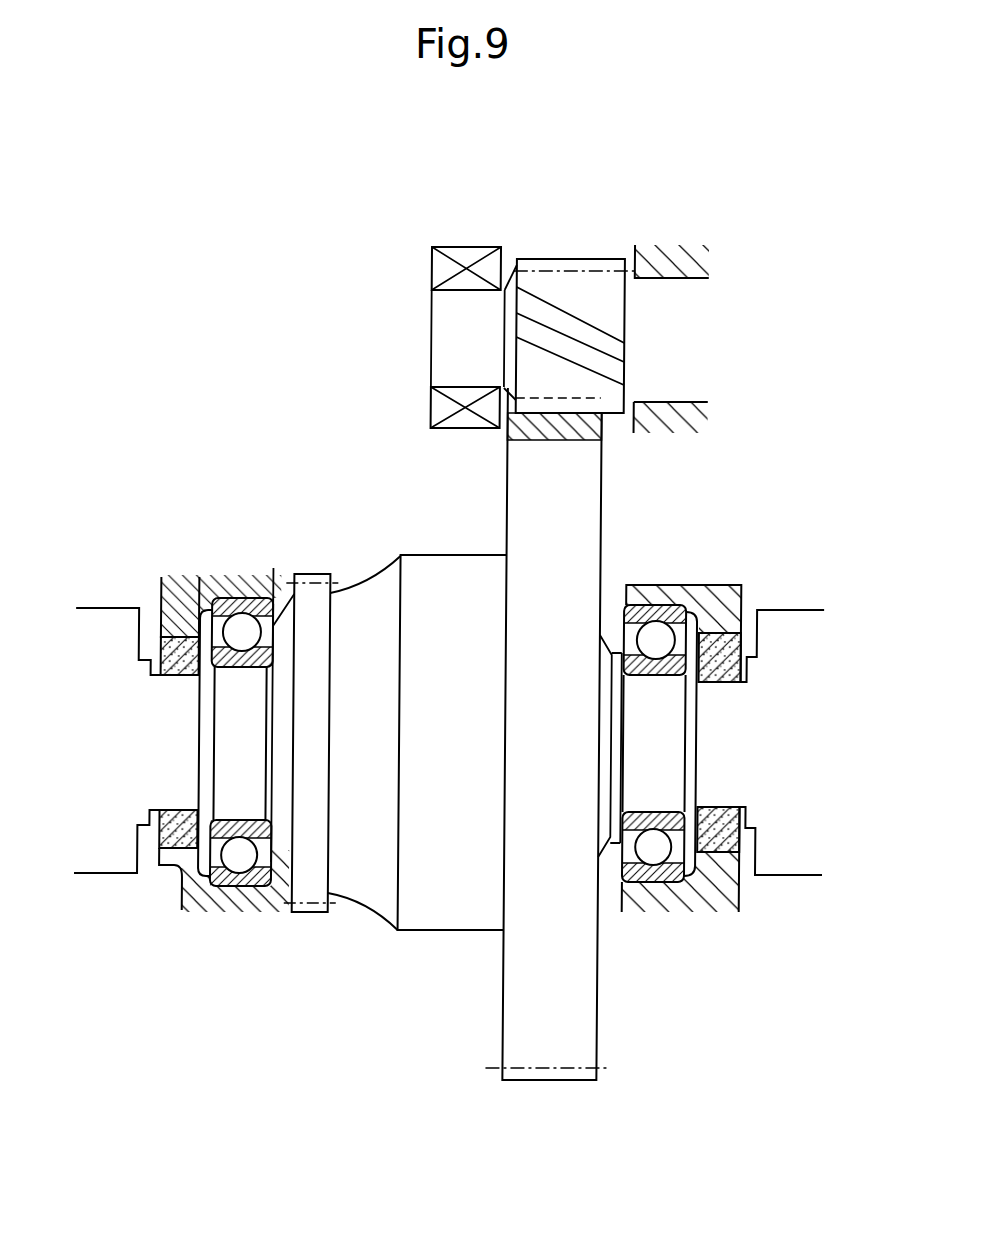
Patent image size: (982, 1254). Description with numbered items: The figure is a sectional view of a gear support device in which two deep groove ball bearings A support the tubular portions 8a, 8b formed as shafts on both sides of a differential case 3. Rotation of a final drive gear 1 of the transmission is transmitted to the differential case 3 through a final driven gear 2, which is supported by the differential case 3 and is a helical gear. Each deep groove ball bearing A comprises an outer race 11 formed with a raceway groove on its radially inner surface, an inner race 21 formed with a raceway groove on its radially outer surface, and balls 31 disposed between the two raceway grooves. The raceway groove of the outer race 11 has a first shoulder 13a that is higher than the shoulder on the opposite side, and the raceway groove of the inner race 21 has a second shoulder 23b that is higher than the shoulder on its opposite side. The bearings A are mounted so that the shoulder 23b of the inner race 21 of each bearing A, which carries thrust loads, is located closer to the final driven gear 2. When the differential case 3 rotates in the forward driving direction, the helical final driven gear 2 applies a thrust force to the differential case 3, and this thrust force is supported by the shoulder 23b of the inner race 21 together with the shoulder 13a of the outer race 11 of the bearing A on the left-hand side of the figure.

The final drive gear 1 is at (570, 262).
The final driven gear 2 is at (515, 477).
The differential case 3 is at (423, 572).
The tubular portion 8a is at (222, 787).
The tubular portion 8b is at (673, 748).
The outer race 11 is at (245, 600).
The first shoulder 13a is at (165, 600).
The inner race 21 is at (245, 668).
The second shoulder 23b is at (267, 645).
The balls 31 is at (243, 867).
The deep groove ball bearing A is at (229, 590).